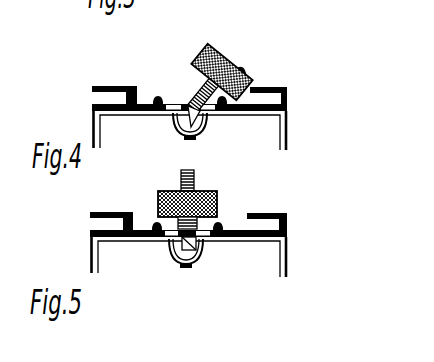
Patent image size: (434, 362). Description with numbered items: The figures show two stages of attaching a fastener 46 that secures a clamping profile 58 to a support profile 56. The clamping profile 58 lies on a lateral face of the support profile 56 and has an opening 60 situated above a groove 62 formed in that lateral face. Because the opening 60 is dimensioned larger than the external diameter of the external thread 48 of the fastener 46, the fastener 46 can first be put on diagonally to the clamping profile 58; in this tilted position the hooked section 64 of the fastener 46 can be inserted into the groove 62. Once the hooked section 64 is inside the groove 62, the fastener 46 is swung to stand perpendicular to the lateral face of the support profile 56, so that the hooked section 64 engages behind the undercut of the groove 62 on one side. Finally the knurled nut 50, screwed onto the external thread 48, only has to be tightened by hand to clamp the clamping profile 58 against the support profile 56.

In FIG. 4, the fastener 46 is at (236, 51).
In FIG. 4, the external thread 48 is at (196, 108).
In FIG. 5, the knurled nut 50 is at (220, 203).
In FIG. 4, the support profile 56 is at (287, 133).
In FIG. 5, the support profile 56 is at (287, 268).
In FIG. 4, the clamping profile 58 is at (283, 85).
In FIG. 5, the clamping profile 58 is at (287, 218).
In FIG. 4, the opening 60 is at (182, 104).
In FIG. 4, the groove 62 is at (182, 112).
In FIG. 5, the groove 62 is at (172, 241).
In FIG. 4, the hooked section 64 is at (204, 112).
In FIG. 5, the hooked section 64 is at (197, 240).